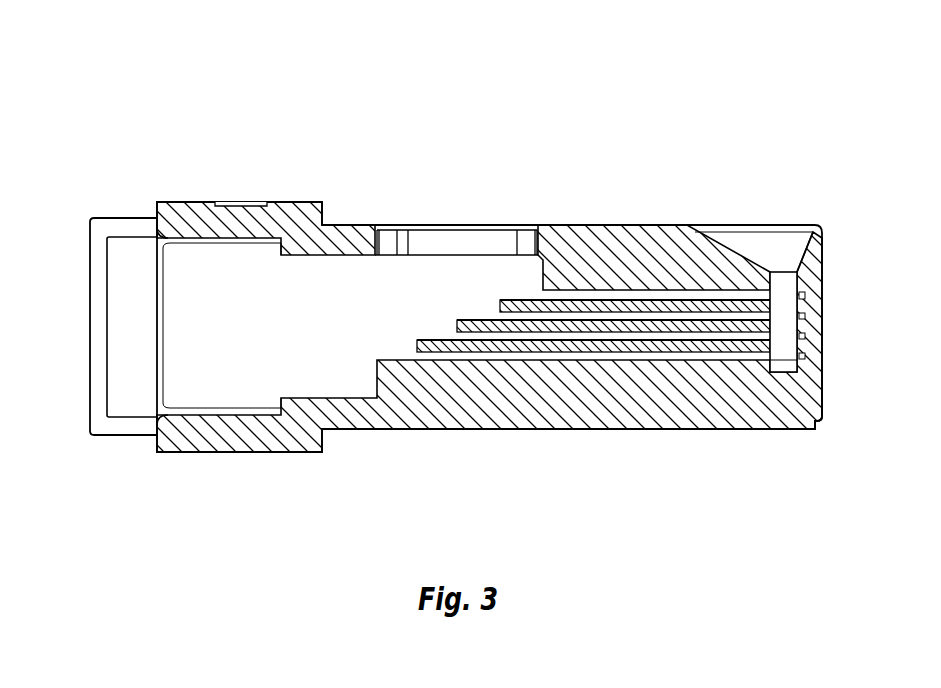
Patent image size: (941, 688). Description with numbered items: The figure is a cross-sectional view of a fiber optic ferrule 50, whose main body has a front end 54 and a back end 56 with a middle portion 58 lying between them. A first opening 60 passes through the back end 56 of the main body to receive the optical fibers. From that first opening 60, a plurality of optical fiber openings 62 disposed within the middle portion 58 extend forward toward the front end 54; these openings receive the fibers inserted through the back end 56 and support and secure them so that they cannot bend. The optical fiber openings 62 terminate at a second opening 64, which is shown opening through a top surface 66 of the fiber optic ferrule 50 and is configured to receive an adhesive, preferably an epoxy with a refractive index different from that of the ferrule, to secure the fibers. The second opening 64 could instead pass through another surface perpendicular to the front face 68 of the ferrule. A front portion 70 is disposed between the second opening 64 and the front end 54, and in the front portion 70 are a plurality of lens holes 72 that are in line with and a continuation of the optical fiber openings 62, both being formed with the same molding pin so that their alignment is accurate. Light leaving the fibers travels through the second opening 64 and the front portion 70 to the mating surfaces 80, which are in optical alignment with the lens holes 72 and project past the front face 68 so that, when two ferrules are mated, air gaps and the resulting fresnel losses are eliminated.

The fiber optic ferrule 50 is at (488, 285).
The front end 54 is at (856, 196).
The back end 56 is at (153, 466).
The middle portion 58 is at (593, 339).
The first opening 60 is at (190, 322).
The optical fiber openings 62 is at (628, 297).
The second opening 64 is at (783, 266).
The top surface 66 is at (592, 225).
The front face 68 is at (823, 397).
The front portion 70 is at (822, 243).
The lens holes 72 is at (801, 294).
The mating surfaces 80 is at (823, 337).